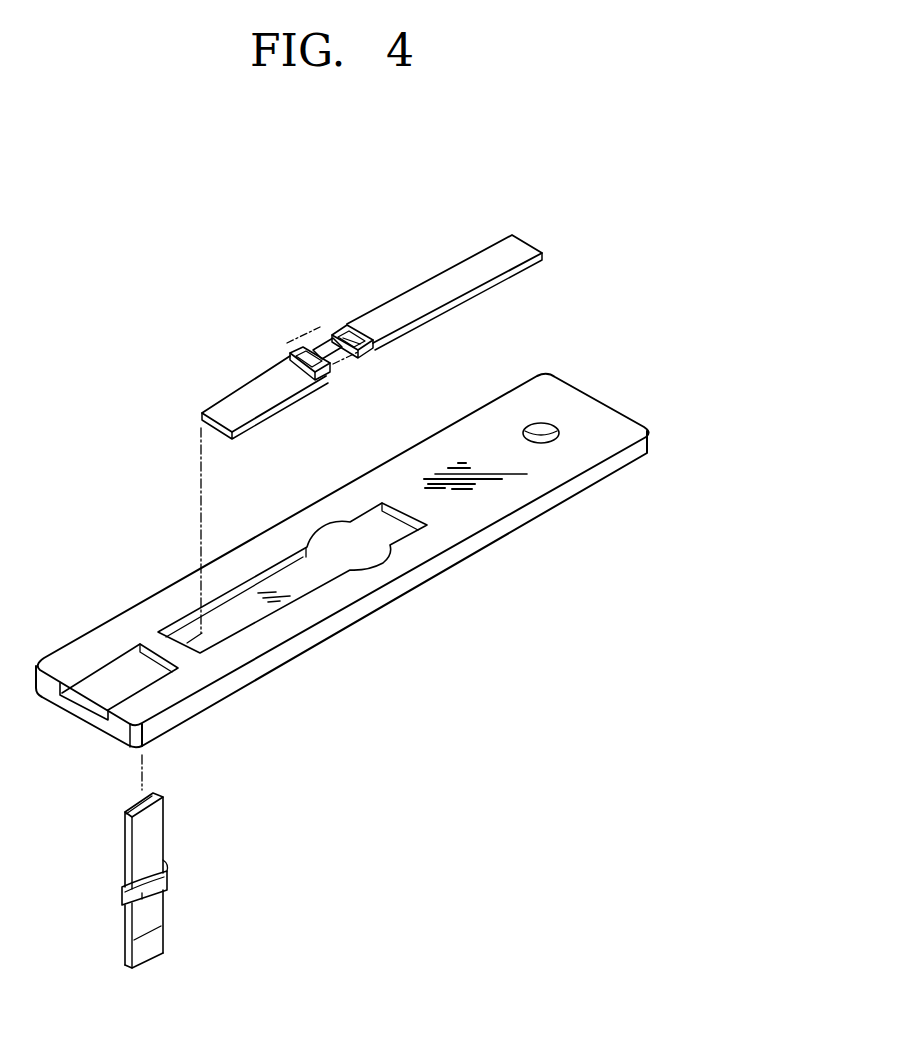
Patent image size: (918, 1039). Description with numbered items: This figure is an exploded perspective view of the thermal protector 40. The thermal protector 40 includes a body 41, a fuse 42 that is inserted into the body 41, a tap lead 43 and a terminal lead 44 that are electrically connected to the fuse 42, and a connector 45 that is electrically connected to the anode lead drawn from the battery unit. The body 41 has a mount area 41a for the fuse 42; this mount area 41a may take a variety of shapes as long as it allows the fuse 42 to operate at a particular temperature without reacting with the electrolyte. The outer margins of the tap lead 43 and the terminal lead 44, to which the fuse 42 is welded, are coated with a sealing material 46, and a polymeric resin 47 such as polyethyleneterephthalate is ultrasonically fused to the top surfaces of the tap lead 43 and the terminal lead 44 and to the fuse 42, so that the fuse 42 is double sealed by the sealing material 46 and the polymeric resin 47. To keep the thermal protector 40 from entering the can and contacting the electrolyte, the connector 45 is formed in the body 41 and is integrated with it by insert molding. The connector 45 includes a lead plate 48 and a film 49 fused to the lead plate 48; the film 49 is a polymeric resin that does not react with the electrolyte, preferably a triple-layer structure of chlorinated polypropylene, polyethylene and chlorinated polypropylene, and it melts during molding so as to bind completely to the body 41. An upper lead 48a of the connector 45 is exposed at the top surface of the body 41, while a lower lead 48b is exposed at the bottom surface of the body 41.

The thermal protector 40 is at (601, 210).
The body 41 is at (617, 422).
The mount area 41a is at (237, 617).
The fuse 42 is at (327, 333).
The tap lead 43 is at (228, 408).
The terminal lead 44 is at (440, 283).
The connector 45 is at (205, 844).
The sealing material 46 is at (290, 360).
The polymeric resin 47 is at (343, 323).
The lead plate 48 is at (127, 940).
The upper lead 48a is at (123, 816).
The lower lead 48b is at (147, 950).
The film 49 is at (120, 903).